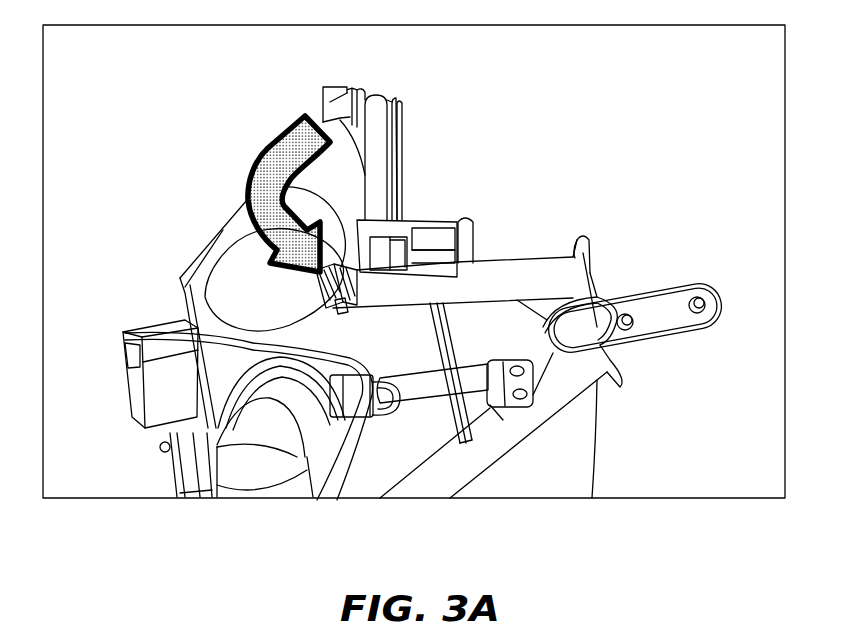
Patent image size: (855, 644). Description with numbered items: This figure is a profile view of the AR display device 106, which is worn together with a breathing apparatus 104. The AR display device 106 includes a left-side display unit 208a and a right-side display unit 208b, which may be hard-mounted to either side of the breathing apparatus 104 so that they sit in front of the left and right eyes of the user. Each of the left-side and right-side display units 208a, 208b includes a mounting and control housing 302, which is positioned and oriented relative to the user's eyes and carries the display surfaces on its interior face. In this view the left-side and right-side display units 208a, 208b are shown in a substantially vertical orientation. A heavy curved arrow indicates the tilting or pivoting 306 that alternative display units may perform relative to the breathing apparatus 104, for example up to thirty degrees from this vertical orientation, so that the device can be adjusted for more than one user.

The AR display device 106 is at (116, 113).
The breathing apparatus 104 is at (232, 290).
The left-side display unit 208a is at (375, 163).
The right-side display unit 208b is at (330, 102).
The mounting and control housing 302 is at (431, 238).
The tilting or pivoting 306 is at (247, 170).